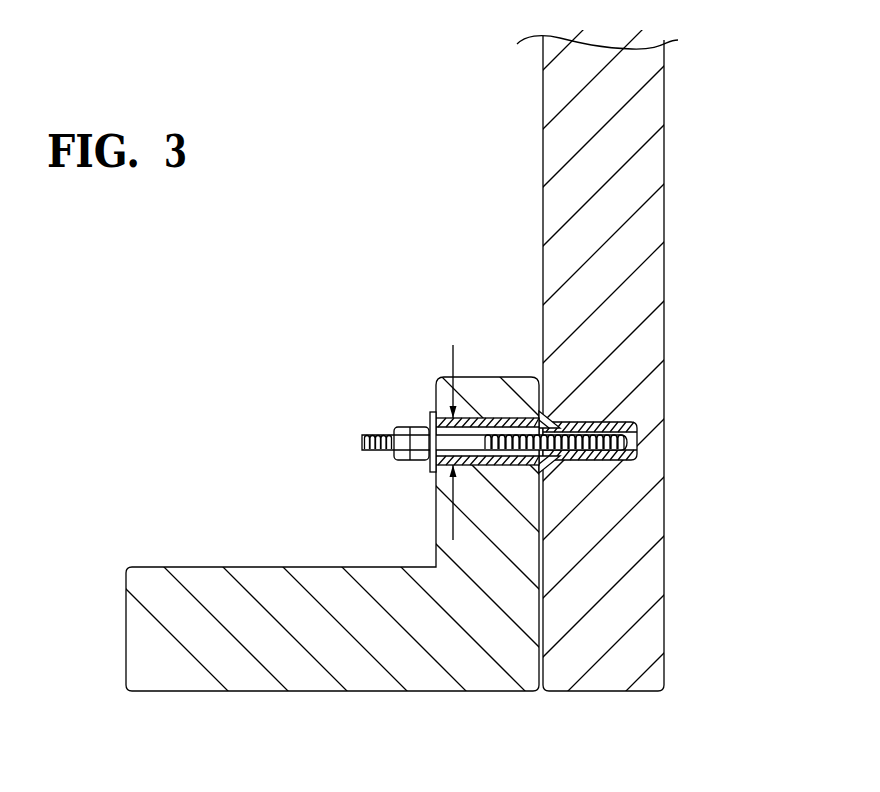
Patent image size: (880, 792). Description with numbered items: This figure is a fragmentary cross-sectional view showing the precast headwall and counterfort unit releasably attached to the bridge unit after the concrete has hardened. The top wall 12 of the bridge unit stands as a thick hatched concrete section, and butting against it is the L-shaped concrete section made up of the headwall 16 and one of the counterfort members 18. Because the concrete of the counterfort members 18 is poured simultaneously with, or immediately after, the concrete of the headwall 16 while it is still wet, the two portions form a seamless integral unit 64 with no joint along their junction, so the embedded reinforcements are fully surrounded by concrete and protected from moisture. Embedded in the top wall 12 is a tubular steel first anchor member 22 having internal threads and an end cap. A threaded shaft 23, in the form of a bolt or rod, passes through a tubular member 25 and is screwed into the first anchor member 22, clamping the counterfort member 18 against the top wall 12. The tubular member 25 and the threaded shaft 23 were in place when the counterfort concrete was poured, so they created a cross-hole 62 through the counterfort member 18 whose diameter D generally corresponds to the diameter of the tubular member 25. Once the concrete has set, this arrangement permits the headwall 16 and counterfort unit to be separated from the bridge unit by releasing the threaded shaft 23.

The top wall 12 is at (643, 283).
The headwall 16 is at (332, 396).
The counterfort member 18 is at (435, 538).
The first anchor member 22 is at (592, 422).
The threaded shaft 23 is at (380, 432).
The tubular member 25 is at (535, 413).
The cross-hole 62 is at (503, 420).
The integral unit 64 is at (223, 662).
The diameter of the cross-hole D is at (453, 357).